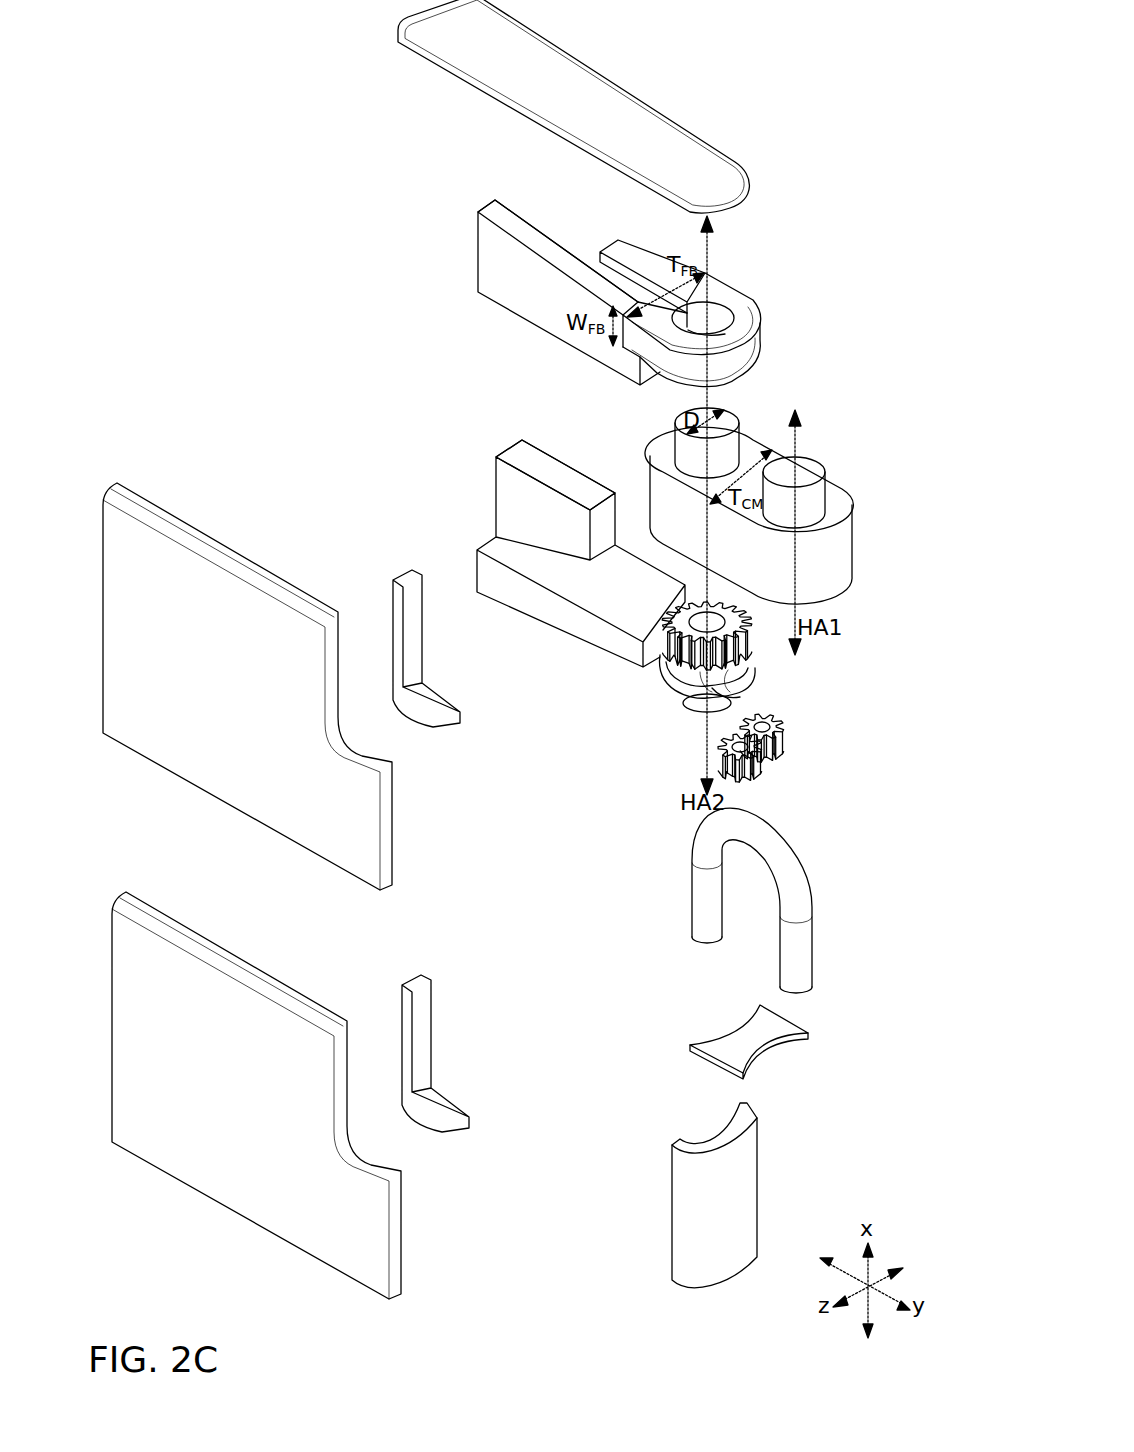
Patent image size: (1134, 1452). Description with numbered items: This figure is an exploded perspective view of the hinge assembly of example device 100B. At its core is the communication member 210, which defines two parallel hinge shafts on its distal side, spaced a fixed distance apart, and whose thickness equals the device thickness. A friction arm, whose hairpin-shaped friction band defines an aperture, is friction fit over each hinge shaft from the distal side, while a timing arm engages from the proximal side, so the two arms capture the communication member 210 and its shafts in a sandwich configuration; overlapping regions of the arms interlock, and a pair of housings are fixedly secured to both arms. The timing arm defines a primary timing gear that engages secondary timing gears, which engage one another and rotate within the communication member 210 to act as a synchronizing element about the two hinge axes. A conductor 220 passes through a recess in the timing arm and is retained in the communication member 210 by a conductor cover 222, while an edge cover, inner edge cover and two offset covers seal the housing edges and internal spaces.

The device 100B is at (952, 21).
The communication member 210 is at (868, 526).
The conductor 220 is at (707, 938).
The conductor cover 222 is at (795, 1040).